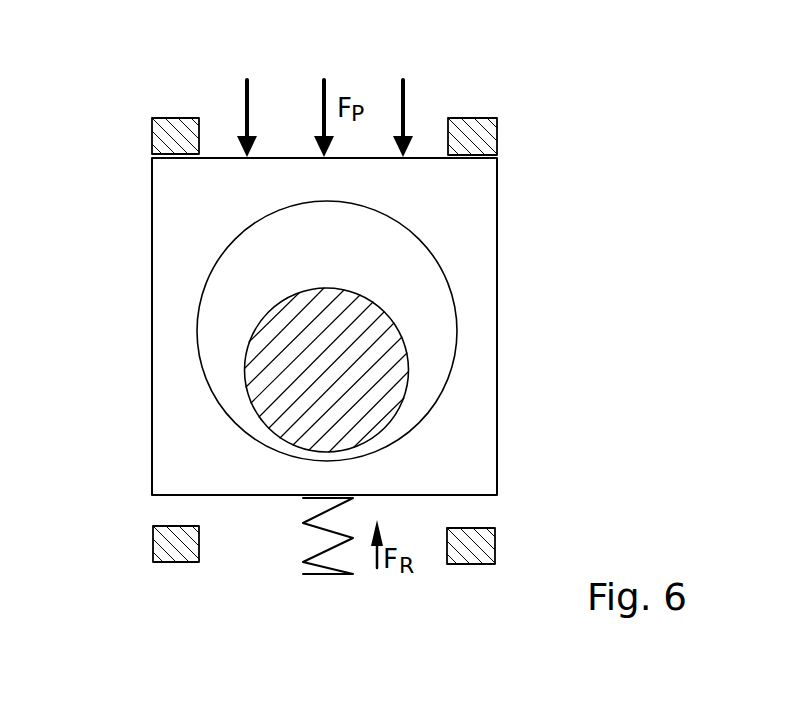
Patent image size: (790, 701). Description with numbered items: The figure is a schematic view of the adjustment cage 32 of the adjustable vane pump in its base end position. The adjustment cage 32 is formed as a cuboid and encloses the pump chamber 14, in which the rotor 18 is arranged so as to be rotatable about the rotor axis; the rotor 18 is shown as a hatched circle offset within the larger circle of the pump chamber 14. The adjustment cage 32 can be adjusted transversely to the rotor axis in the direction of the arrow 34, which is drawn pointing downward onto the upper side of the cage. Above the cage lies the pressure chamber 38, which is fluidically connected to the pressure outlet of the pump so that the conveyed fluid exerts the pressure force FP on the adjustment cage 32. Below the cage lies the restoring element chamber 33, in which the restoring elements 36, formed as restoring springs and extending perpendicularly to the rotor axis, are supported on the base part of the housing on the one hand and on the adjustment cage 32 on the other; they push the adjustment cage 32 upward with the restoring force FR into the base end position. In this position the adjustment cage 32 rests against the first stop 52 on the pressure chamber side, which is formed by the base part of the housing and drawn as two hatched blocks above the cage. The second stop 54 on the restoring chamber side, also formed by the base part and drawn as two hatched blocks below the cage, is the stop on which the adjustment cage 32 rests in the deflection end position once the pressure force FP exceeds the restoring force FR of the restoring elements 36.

The pump chamber 14 is at (430, 305).
The rotor 18 is at (385, 368).
The adjustment cage 32 is at (473, 252).
The restoring element chamber 33 is at (246, 542).
The arrow 34 is at (407, 108).
The restoring element 36 is at (335, 550).
The pressure chamber 38 is at (273, 105).
The first stop 52 is at (168, 133).
The second stop 54 is at (175, 547).